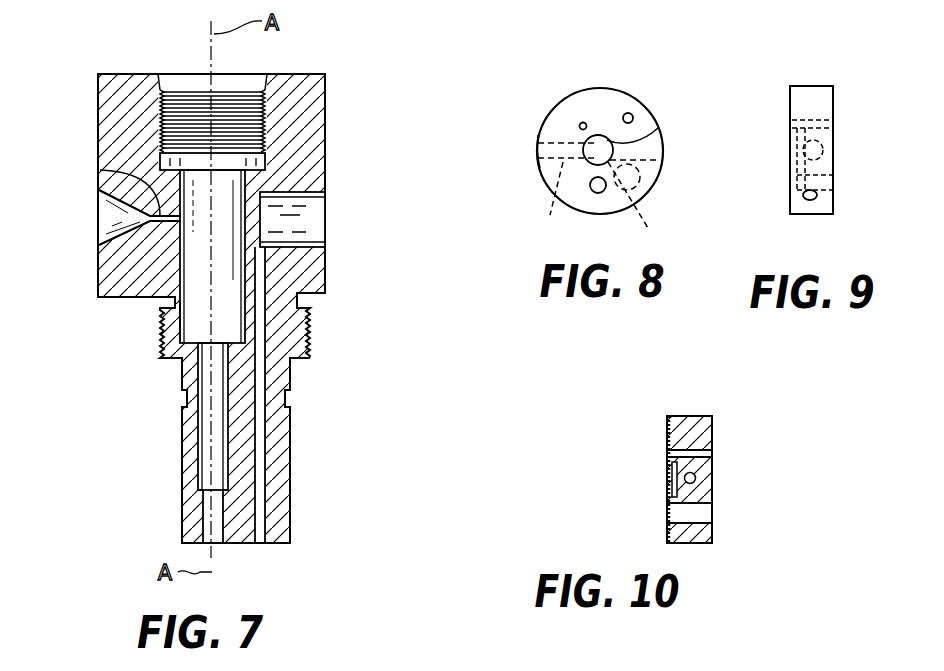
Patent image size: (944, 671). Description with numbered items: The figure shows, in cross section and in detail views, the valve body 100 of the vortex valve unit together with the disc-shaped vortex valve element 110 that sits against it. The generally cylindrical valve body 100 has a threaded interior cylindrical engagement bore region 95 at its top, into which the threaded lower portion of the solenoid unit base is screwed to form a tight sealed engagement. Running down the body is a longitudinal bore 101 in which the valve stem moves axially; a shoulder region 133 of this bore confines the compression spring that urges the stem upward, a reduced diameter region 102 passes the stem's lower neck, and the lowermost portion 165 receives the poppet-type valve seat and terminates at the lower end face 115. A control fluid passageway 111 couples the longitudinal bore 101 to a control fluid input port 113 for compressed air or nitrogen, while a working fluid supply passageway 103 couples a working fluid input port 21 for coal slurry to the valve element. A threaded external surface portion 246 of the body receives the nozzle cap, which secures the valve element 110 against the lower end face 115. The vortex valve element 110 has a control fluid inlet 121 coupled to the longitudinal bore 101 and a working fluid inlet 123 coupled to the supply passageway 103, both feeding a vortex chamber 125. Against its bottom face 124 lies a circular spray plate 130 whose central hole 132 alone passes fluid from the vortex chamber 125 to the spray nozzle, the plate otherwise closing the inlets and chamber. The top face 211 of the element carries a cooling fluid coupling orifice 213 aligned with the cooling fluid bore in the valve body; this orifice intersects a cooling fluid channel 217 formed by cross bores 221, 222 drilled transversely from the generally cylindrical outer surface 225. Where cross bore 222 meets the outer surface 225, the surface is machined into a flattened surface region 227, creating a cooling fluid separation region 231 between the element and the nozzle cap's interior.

In FIG. 7, the working fluid input port 21 is at (336, 217).
In FIG. 7, the threaded interior cylindrical engagement bore region 95 is at (177, 88).
In FIG. 7, the valve body 100 is at (325, 104).
In FIG. 7, the longitudinal bore 101 is at (195, 232).
In FIG. 7, the reduced diameter region 102 is at (200, 396).
In FIG. 7, the working fluid supply passageway 103 is at (260, 508).
In FIG. 8, the vortex valve element 110 is at (538, 184).
In FIG. 9, the vortex valve element 110 is at (833, 95).
In FIG. 10, the vortex valve element 110 is at (712, 428).
In FIG. 7, the control fluid passageway 111 is at (104, 172).
In FIG. 7, the control fluid input port 113 is at (104, 219).
In FIG. 7, the lower end face 115 is at (280, 543).
In FIG. 8, the control fluid inlet 121 is at (582, 123).
In FIG. 10, the control fluid inlet 121 is at (712, 453).
In FIG. 8, the working fluid inlet 123 is at (598, 193).
In FIG. 10, the working fluid inlet 123 is at (700, 512).
In FIG. 10, the bottom face 124 is at (690, 543).
In FIG. 8, the vortex chamber 125 is at (656, 136).
In FIG. 9, the vortex chamber 125 is at (795, 146).
In FIG. 10, the vortex chamber 125 is at (672, 470).
In FIG. 10, the spray plate 130 is at (667, 416).
In FIG. 10, the central hole 132 is at (667, 482).
In FIG. 7, the shoulder region 133 is at (195, 333).
In FIG. 7, the lowermost portion 165 is at (205, 512).
In FIG. 9, the top face 211 is at (833, 205).
In FIG. 8, the cooling fluid coupling orifice 213 is at (660, 160).
In FIG. 9, the cooling fluid coupling orifice 213 is at (833, 183).
In FIG. 8, the cooling fluid channel 217 is at (645, 179).
In FIG. 9, the cooling fluid channel 217 is at (835, 158).
In FIG. 8, the cross bore 221 is at (640, 209).
In FIG. 8, the cross bore 222 is at (553, 202).
In FIG. 8, the outer surface 225 is at (622, 89).
In FIG. 9, the outer surface 225 is at (801, 215).
In FIG. 10, the outer surface 225 is at (693, 416).
In FIG. 8, the flattened surface region 227 is at (539, 140).
In FIG. 8, the separation region 231 is at (540, 150).
In FIG. 7, the threaded external surface portion 246 is at (313, 336).